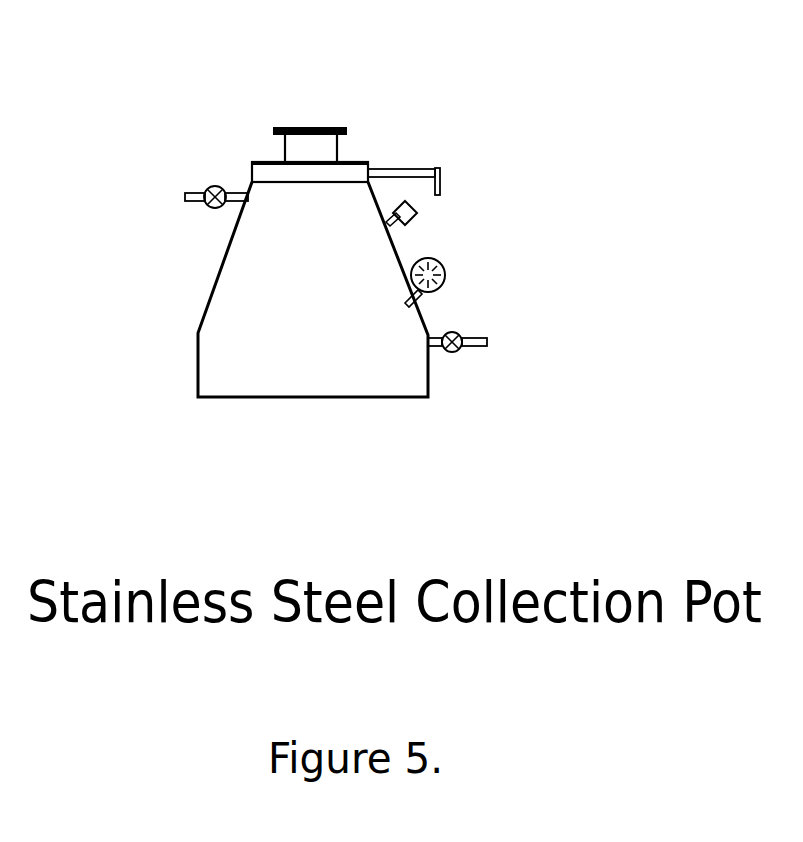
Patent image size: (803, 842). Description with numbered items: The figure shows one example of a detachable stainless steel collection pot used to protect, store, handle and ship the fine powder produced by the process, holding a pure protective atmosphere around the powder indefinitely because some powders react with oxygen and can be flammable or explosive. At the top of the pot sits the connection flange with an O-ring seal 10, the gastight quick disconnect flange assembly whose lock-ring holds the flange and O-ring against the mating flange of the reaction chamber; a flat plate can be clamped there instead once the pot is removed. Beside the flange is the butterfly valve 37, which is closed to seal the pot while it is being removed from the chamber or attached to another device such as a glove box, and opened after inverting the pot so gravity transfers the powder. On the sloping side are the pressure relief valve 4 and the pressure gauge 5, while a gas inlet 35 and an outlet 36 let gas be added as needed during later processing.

The quick disconnect flange assembly 10 is at (288, 125).
The gas inlet 35 is at (210, 185).
The butterfly valve 37 is at (413, 165).
The pressure relief valve 4 is at (427, 220).
The pressure gauge 5 is at (453, 283).
The gas outlet 36 is at (495, 348).